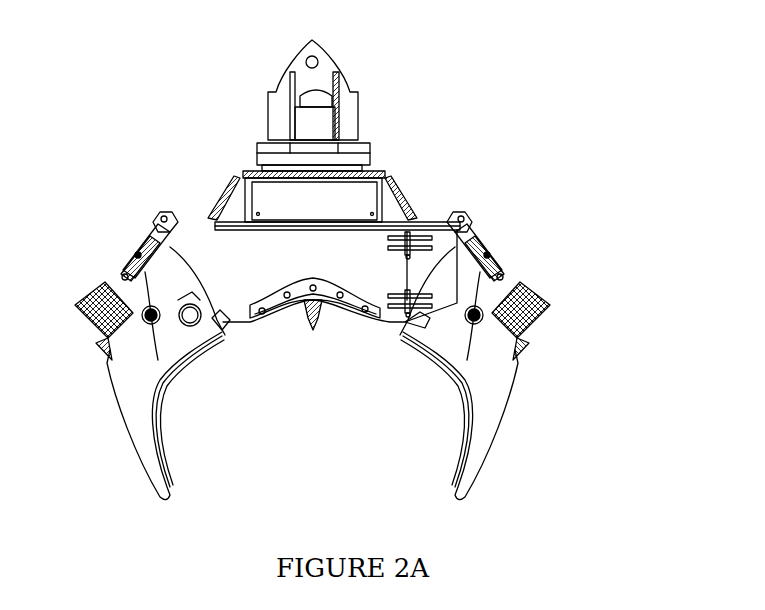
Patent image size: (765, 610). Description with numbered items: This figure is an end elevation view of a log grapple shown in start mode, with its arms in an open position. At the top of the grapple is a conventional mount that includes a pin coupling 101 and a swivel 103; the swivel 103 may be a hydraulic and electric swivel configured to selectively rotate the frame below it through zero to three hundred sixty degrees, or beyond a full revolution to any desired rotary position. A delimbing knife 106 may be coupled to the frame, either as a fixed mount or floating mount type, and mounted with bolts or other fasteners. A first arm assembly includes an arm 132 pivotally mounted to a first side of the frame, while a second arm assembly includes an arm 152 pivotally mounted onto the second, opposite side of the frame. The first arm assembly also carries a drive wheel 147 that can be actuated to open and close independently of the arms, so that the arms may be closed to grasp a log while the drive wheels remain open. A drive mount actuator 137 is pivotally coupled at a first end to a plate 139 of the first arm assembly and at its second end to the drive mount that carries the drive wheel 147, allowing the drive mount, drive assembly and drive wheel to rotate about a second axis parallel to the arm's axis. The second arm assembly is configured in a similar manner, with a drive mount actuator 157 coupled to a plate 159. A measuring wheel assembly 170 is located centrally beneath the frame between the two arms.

The pin coupling 101 is at (319, 60).
The swivel 103 is at (386, 150).
The delimbing knife 106 is at (326, 290).
The arm 132 is at (127, 388).
The drive mount actuator 137 is at (150, 247).
The plate 139 is at (182, 232).
The drive wheel 147 is at (95, 345).
The arm 152 is at (495, 393).
The drive mount actuator 157 is at (490, 240).
The plate 159 is at (462, 212).
The measuring wheel assembly 170 is at (305, 335).